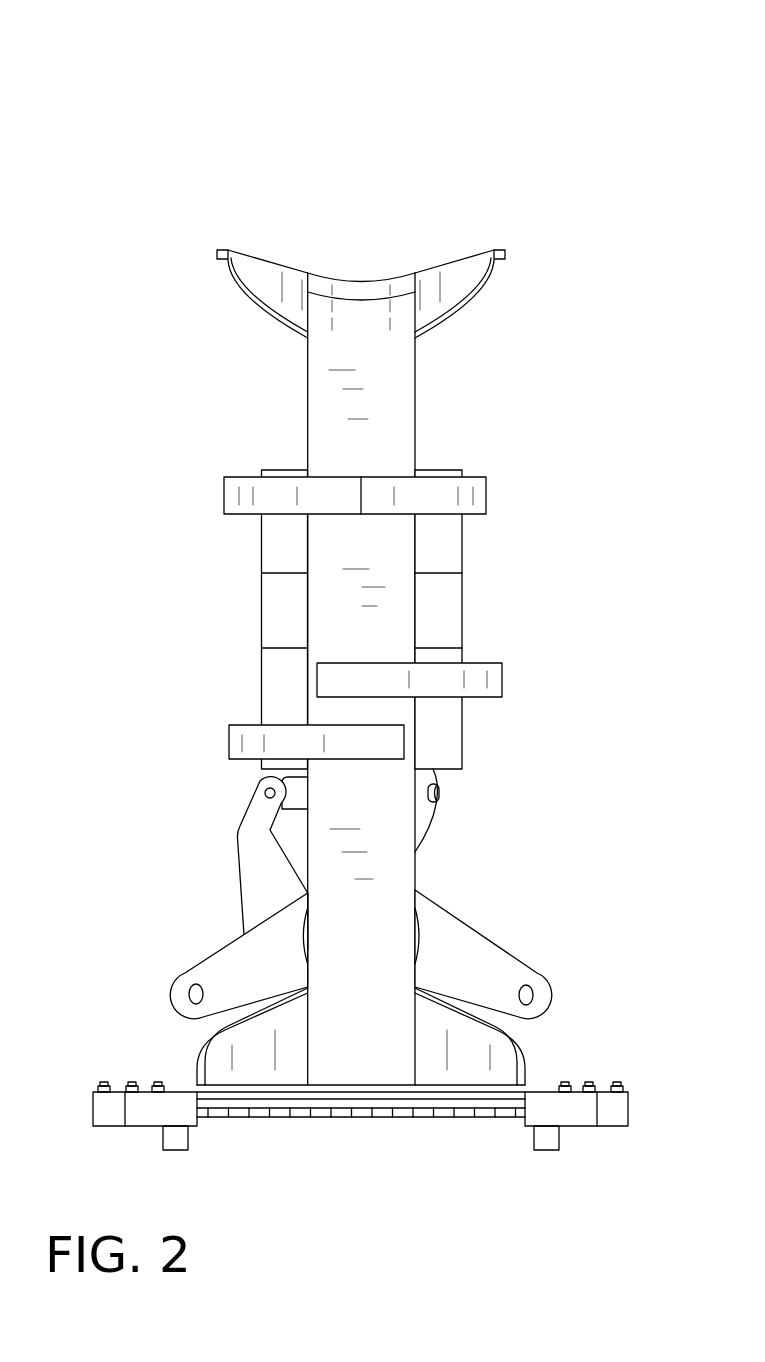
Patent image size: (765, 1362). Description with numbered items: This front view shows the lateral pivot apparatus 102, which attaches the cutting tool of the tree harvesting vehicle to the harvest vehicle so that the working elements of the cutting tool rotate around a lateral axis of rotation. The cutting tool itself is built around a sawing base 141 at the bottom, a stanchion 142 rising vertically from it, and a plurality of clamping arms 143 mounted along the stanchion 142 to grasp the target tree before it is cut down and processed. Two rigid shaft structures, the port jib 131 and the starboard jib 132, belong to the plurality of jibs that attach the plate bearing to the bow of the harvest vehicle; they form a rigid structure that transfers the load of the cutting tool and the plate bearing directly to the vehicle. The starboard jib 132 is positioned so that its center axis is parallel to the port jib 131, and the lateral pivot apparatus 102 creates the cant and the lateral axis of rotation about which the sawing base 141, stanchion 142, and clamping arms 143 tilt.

The lateral pivot apparatus 102 is at (149, 118).
The stanchion 142 is at (400, 400).
The plurality of clamping arms 143 is at (493, 470).
The port jib 131 is at (467, 953).
The starboard jib 132 is at (225, 952).
The sawing base 141 is at (568, 1112).